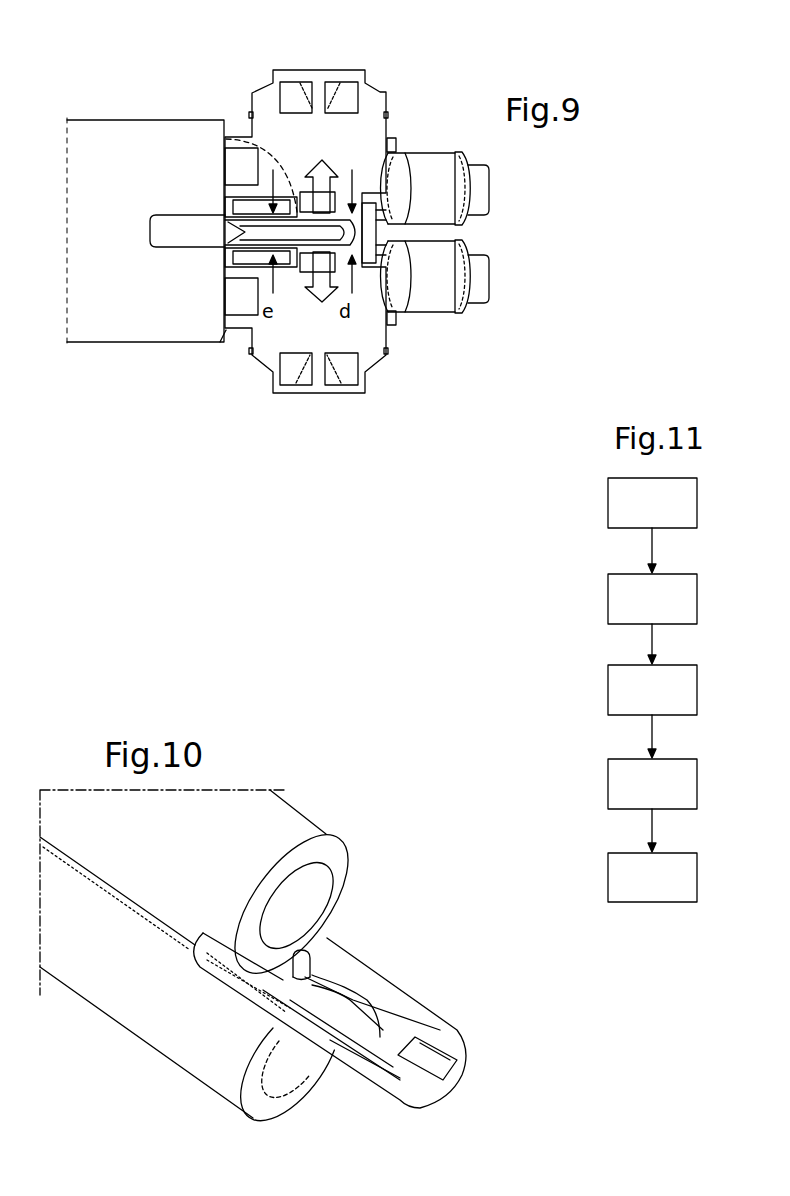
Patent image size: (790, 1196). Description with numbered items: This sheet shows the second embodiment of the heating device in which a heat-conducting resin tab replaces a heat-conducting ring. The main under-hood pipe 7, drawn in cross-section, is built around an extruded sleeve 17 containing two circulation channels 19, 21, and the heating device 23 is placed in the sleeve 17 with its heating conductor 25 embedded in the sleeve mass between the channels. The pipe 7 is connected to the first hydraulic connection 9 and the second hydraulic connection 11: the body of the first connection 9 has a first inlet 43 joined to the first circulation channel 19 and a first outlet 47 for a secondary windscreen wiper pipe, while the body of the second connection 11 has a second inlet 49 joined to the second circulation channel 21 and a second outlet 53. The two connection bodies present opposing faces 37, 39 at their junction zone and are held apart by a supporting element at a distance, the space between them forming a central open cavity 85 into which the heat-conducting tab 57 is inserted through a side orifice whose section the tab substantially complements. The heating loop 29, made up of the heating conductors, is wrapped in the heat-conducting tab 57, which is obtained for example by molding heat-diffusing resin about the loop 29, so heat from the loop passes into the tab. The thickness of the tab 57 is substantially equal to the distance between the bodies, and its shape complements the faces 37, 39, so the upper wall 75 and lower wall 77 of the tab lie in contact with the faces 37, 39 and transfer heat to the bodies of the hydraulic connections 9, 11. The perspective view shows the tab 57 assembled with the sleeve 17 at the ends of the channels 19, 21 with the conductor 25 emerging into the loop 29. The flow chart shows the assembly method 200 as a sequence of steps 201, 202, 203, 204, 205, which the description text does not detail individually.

In FIG. 9, the main under-hood pipe 7 is at (164, 97).
In FIG. 9, the first hydraulic connection 9 is at (383, 92).
In FIG. 9, the second hydraulic connection 11 is at (386, 364).
In FIG. 9, the extruded sleeve 17 is at (107, 134).
In FIG. 10, the extruded sleeve 17 is at (97, 1005).
In FIG. 10, the first circulation channel 19 is at (312, 895).
In FIG. 10, the second circulation channel 21 is at (287, 1087).
In FIG. 9, the heating device 23 is at (212, 261).
In FIG. 10, the heating conductor 25 is at (320, 940).
In FIG. 9, the heating loop 29 is at (241, 275).
In FIG. 10, the heating loop 29 is at (393, 1017).
In FIG. 9, the face of the first hydraulic connection 37 is at (409, 200).
In FIG. 9, the face of the second hydraulic connection 39 is at (409, 272).
In FIG. 9, the first inlet 43 is at (228, 137).
In FIG. 9, the first outlet 47 is at (489, 182).
In FIG. 9, the second inlet 49 is at (224, 342).
In FIG. 9, the second outlet 53 is at (489, 280).
In FIG. 9, the heat-conducting tab 57 is at (238, 186).
In FIG. 10, the heat-conducting tab 57 is at (353, 1087).
In FIG. 9, the upper wall of the tab 75 is at (257, 135).
In FIG. 10, the upper wall of the tab 75 is at (432, 1007).
In FIG. 10, the lower wall of the tab 77 is at (382, 1085).
In FIG. 9, the central open cavity 85 is at (392, 245).
In FIG. 11, the method 200 is at (590, 547).
In FIG. 11, the method step 201 is at (652, 503).
In FIG. 11, the method step 202 is at (652, 599).
In FIG. 11, the method step 203 is at (652, 690).
In FIG. 11, the method step 204 is at (652, 784).
In FIG. 11, the method step 205 is at (652, 877).